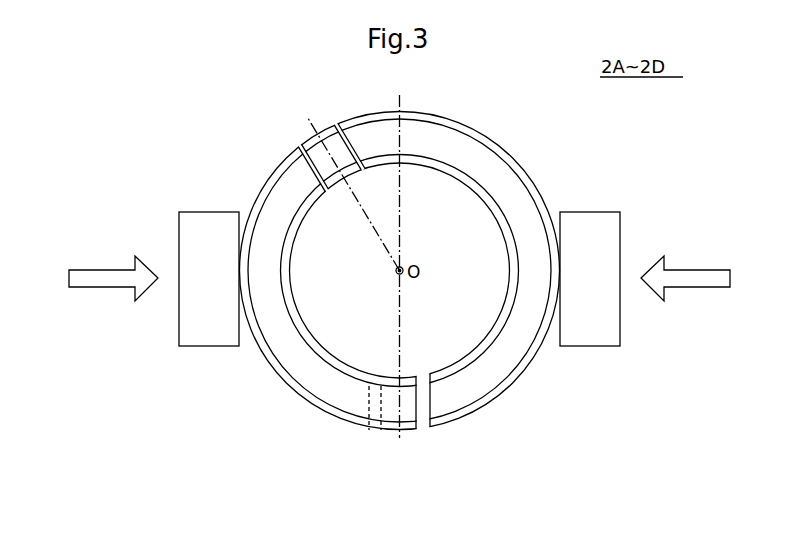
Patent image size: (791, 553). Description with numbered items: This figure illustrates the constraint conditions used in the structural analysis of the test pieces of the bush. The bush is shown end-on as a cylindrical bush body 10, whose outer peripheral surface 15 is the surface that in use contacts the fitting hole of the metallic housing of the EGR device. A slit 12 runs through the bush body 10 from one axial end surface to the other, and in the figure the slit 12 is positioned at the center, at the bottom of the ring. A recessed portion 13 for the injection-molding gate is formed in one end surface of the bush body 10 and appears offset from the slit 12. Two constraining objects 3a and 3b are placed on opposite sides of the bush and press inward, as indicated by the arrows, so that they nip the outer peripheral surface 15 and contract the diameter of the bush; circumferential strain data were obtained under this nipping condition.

The bush body 10 is at (482, 139).
The slit 12 is at (396, 444).
The recessed portion for gate 13 is at (317, 150).
The outer peripheral surface 15 is at (295, 395).
The constraining object 3a is at (204, 211).
The constraining object 3b is at (596, 211).